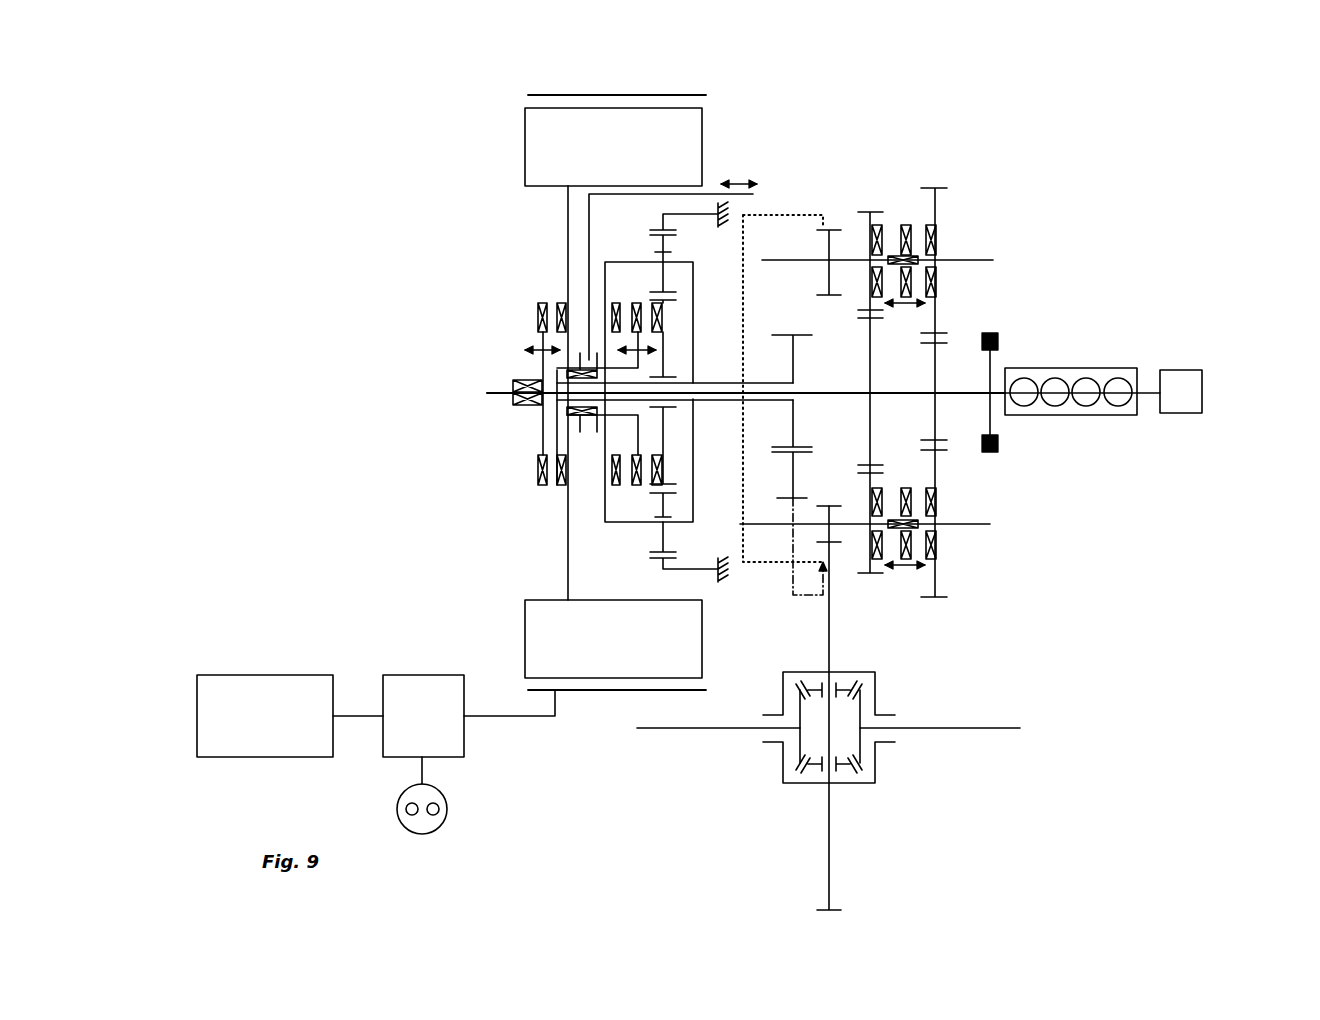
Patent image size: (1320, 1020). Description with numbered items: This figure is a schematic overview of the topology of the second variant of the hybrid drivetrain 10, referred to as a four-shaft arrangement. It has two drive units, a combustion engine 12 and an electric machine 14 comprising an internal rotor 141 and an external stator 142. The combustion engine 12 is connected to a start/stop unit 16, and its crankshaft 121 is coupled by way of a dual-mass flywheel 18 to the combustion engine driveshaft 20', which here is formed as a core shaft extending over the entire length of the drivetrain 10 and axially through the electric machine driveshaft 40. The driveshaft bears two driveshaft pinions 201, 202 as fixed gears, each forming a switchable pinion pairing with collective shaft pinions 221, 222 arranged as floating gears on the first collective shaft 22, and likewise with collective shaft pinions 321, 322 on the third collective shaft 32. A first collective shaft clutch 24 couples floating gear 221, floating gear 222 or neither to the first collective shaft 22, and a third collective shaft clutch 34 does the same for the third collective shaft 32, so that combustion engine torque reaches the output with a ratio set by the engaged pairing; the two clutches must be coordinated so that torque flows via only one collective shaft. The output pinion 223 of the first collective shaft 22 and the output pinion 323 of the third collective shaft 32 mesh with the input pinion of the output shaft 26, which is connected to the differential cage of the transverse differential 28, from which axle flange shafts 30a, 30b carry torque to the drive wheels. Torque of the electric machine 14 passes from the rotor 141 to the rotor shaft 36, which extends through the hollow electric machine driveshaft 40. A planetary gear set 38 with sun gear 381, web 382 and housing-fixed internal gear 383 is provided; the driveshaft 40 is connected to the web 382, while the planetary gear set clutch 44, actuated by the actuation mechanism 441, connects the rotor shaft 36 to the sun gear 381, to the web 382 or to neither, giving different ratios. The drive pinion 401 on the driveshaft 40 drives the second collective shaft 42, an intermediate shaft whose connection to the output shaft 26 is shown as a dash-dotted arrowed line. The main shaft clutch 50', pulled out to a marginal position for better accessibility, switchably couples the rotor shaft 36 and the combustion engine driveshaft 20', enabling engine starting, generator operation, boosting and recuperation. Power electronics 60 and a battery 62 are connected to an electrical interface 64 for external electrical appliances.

The drivetrain 10 is at (1212, 142).
The combustion engine 12 is at (1125, 368).
The crankshaft 121 is at (1097, 376).
The electric machine 14 is at (490, 106).
The rotor 141 is at (558, 142).
The stator 142 is at (548, 95).
The start/stop unit 16 is at (1200, 378).
The dual-mass flywheel 18 is at (1007, 368).
The combustion engine driveshaft 20' is at (1020, 328).
The driveshaft pinion 201 is at (937, 438).
The driveshaft pinion 202 is at (945, 452).
The first collective shaft 22 is at (990, 524).
The collective shaft pinion 221 is at (937, 557).
The collective shaft pinion 222 is at (873, 573).
The output pinion 223 is at (832, 545).
The first collective shaft clutch 24 is at (905, 566).
The output shaft 26 is at (827, 600).
The transverse differential 28 is at (840, 748).
The axle flange shaft 30a is at (653, 735).
The axle flange shaft 30b is at (1020, 735).
The third collective shaft 32 is at (970, 258).
The collective shaft pinion 321 is at (926, 188).
The collective shaft pinion 322 is at (860, 212).
The output pinion 323 is at (829, 232).
The third collective shaft clutch 34 is at (900, 225).
The rotor shaft 36 is at (538, 402).
The planetary gear set 38 is at (602, 297).
The sun gear 381 is at (565, 370).
The web 382 is at (627, 262).
The internal gear 383 is at (683, 214).
The electric machine driveshaft 40 is at (708, 399).
The drive pinion 401 is at (775, 360).
The second collective shaft 42 is at (780, 470).
The planetary gear set clutch 44 is at (640, 328).
The actuation mechanism 441 is at (722, 183).
The main shaft clutch 50' is at (504, 394).
The power electronics 60 is at (392, 748).
The battery 62 is at (265, 742).
The electrical interface 64 is at (410, 818).